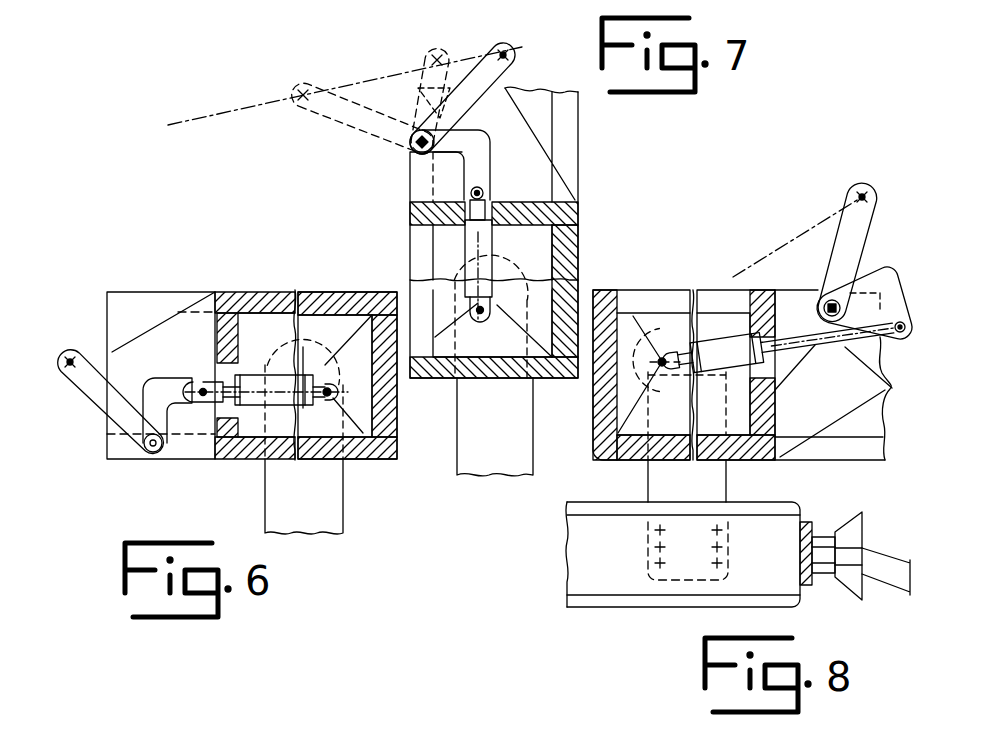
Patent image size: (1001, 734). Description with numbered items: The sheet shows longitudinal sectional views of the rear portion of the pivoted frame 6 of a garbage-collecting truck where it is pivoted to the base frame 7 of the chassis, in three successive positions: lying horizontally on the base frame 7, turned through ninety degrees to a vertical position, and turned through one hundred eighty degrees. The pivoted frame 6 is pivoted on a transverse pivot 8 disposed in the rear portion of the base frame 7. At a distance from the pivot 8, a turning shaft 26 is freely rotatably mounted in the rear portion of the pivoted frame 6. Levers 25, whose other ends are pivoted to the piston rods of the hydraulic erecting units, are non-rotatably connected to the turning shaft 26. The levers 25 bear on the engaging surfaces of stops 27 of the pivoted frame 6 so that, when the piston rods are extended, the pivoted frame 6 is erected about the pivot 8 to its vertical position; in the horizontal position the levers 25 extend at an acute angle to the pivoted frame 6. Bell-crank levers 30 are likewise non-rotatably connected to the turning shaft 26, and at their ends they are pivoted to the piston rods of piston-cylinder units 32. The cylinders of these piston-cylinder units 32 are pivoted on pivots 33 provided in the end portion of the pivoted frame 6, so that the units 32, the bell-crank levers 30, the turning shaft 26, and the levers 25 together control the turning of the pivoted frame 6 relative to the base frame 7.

In FIG. 6, the pivoted frame 6 is at (133, 298).
In FIG. 7, the pivoted frame 6 is at (578, 220).
In FIG. 8, the pivoted frame 6 is at (745, 460).
In FIG. 8, the base frame 7 is at (590, 525).
In FIG. 6, the transverse pivot 8 is at (323, 370).
In FIG. 6, the lever 25 is at (100, 386).
In FIG. 7, the lever 25 is at (477, 99).
In FIG. 8, the lever 25 is at (857, 255).
In FIG. 6, the turning shaft 26 is at (155, 452).
In FIG. 6, the stop 27 is at (170, 337).
In FIG. 6, the bell-crank lever 30 is at (168, 383).
In FIG. 7, the bell-crank lever 30 is at (484, 158).
In FIG. 8, the bell-crank lever 30 is at (890, 291).
In FIG. 6, the piston-cylinder unit 32 is at (255, 403).
In FIG. 7, the piston-cylinder unit 32 is at (492, 240).
In FIG. 8, the piston-cylinder unit 32 is at (728, 338).
In FIG. 6, the pivot 33 is at (336, 394).
In FIG. 7, the pivot 33 is at (482, 322).
In FIG. 8, the pivot 33 is at (655, 352).